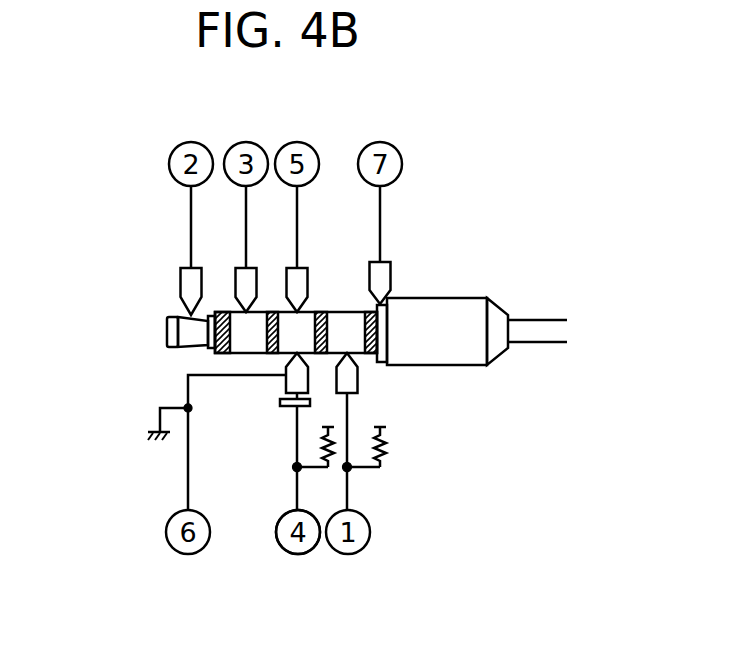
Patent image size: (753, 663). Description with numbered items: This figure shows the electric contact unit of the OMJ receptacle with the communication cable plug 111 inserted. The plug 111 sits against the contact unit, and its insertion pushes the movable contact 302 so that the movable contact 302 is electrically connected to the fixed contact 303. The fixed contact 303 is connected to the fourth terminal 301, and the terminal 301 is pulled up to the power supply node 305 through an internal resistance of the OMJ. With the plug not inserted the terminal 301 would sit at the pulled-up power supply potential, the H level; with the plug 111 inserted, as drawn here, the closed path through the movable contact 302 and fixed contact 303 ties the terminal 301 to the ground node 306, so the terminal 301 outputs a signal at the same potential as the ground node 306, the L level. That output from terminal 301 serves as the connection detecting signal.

The communication cable plug 111 is at (429, 297).
The fourth terminal 301 is at (282, 546).
The movable contact 302 is at (285, 386).
The fixed contact 303 is at (283, 407).
The power supply node 305 is at (335, 437).
The ground node 306 is at (155, 418).